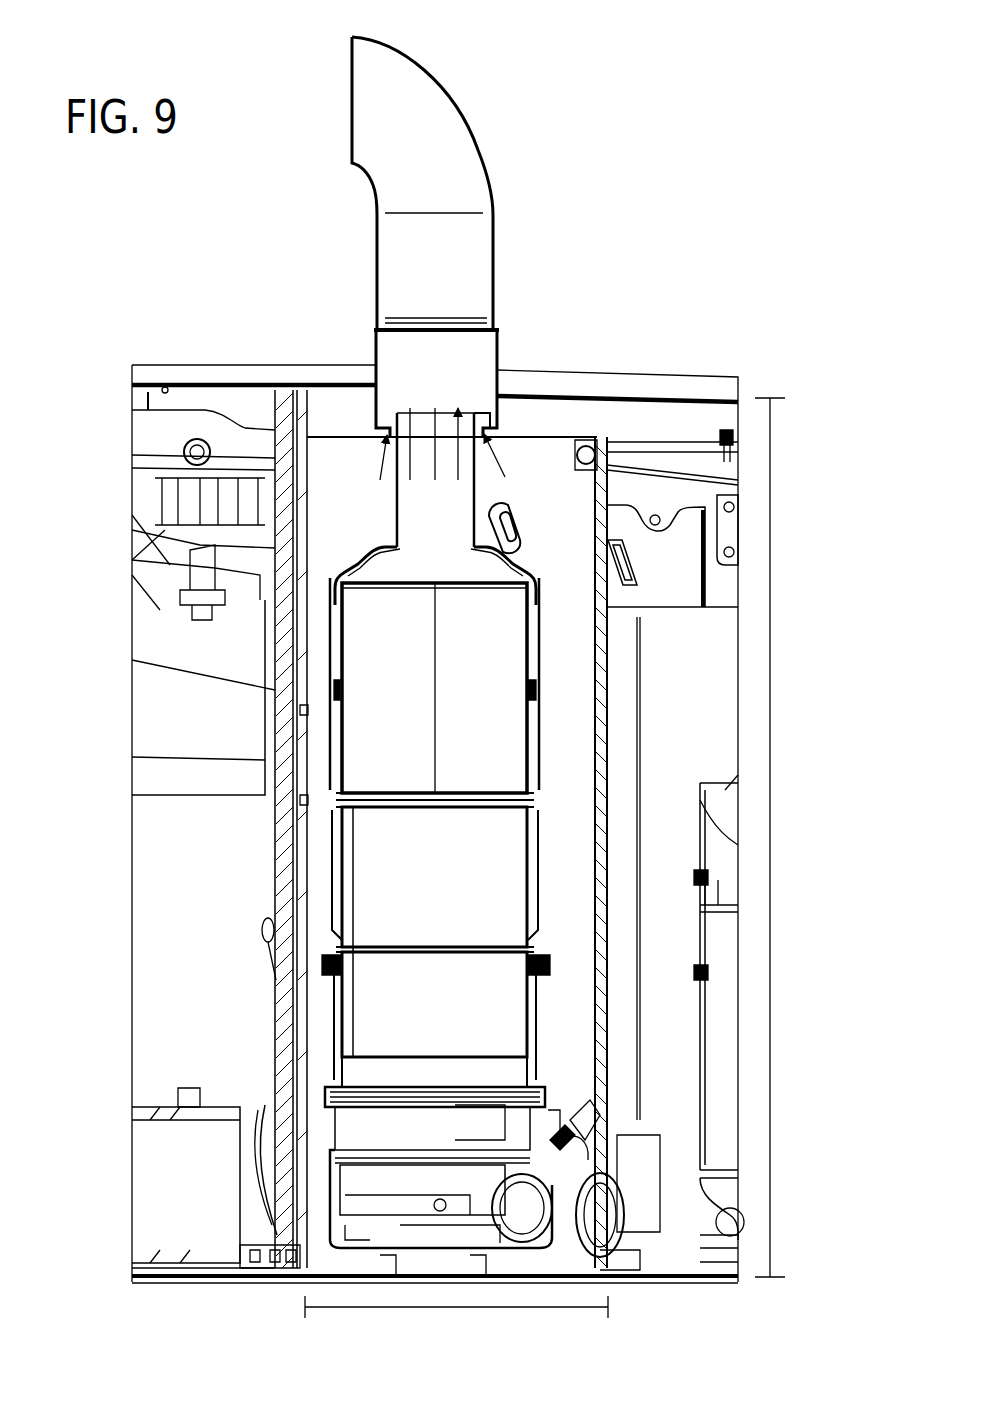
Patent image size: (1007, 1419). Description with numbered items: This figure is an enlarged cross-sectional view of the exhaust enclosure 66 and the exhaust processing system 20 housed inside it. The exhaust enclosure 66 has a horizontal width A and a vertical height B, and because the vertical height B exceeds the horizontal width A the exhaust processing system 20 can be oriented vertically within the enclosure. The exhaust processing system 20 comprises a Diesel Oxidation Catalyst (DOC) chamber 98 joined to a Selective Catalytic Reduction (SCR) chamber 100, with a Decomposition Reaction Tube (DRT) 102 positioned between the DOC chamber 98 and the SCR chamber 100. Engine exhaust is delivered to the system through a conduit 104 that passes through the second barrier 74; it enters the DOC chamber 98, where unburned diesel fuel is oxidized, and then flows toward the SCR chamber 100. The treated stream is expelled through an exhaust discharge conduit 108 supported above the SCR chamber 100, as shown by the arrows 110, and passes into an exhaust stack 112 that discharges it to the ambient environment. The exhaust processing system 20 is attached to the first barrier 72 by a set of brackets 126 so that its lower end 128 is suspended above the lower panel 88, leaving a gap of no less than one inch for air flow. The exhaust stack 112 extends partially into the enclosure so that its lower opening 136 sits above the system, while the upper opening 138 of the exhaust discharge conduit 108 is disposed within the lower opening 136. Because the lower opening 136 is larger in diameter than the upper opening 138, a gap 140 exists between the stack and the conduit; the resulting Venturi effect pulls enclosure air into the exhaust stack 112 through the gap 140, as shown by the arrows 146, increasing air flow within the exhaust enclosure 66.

The exhaust stack 112 is at (458, 102).
The gap 140 is at (494, 370).
The upper opening 138 is at (374, 385).
The lower opening 136 is at (497, 400).
The arrows 110 is at (433, 417).
The arrows 146 is at (380, 458).
The exhaust discharge conduit 108 is at (395, 498).
The first barrier 72 is at (300, 525).
The exhaust enclosure 66 is at (555, 462).
The second barrier 74 is at (608, 440).
The brackets 126 is at (300, 657).
The Selective Catalytic Reduction (SCR) chamber 100 is at (370, 742).
The Decomposition Reaction Tube (DRT) 102 is at (378, 885).
The Diesel Oxidation Catalyst (DOC) chamber 98 is at (380, 1000).
The exhaust processing system 20 is at (318, 1000).
The lower end 128 is at (330, 1243).
The conduit 104 is at (612, 1278).
The lower panel 88 is at (713, 1280).
The vertical height B is at (773, 797).
The horizontal width A is at (460, 1310).